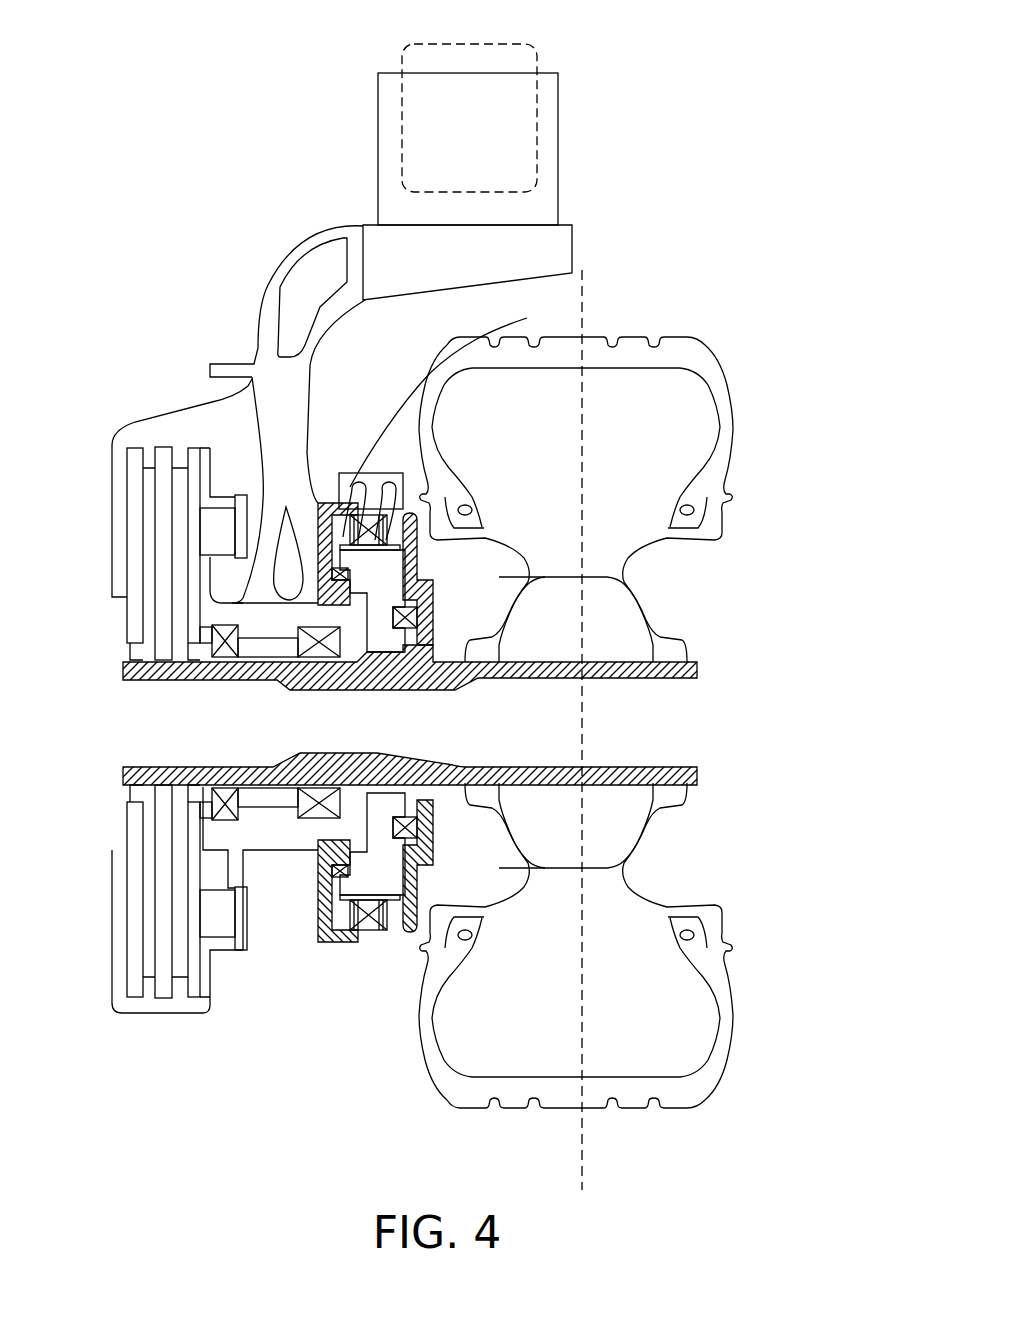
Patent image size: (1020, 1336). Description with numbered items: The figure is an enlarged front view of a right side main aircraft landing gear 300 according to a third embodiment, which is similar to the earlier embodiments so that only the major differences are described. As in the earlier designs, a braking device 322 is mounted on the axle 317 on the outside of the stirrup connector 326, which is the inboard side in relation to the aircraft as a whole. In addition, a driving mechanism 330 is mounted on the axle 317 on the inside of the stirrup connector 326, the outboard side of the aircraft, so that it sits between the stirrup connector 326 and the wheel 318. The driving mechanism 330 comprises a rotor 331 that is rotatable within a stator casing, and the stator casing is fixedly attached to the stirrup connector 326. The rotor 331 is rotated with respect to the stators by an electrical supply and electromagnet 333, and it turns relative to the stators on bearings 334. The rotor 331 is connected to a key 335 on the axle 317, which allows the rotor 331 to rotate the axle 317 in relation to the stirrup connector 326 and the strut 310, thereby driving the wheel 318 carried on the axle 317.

The right side main aircraft landing gear 300 is at (768, 64).
The strut 310 is at (560, 127).
The axle 317 is at (187, 716).
The wheel 318 is at (728, 495).
The braking device 322 is at (92, 446).
The stirrup connector 326 is at (290, 258).
The driving mechanism 330 is at (363, 375).
The rotor 331 is at (408, 938).
The electrical supply and electromagnet 333 is at (527, 318).
The bearings 334 is at (417, 617).
The key 335 is at (398, 658).